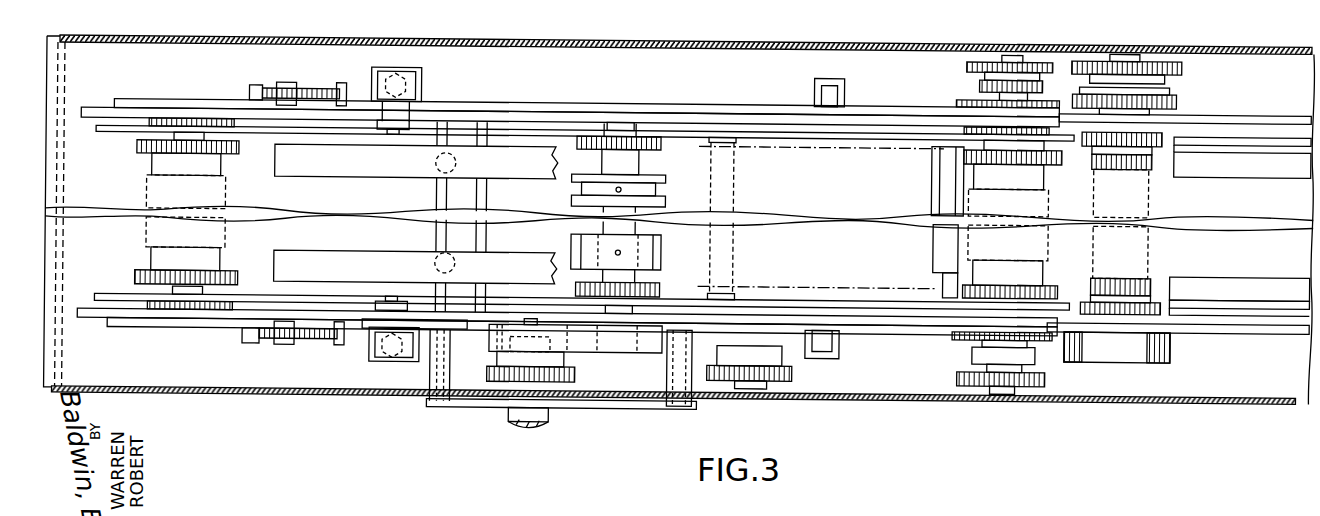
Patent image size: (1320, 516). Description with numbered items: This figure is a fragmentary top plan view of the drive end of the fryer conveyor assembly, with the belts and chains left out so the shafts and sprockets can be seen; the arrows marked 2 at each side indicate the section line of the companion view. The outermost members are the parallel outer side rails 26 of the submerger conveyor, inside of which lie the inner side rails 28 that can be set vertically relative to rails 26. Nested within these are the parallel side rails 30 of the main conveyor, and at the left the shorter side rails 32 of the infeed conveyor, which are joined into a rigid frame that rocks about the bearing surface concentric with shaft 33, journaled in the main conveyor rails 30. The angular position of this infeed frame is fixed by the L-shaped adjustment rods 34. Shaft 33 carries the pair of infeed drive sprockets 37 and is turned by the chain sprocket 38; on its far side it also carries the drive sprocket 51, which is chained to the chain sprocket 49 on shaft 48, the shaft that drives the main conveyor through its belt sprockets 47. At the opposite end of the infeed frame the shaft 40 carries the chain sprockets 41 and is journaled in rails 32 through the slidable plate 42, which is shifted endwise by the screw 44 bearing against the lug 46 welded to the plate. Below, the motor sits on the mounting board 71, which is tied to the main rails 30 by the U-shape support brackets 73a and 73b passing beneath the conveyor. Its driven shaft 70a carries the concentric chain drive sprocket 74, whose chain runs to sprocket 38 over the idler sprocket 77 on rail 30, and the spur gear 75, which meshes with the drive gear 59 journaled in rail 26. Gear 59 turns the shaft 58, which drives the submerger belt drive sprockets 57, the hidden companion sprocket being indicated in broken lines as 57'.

The section line 2- 2 is at (23, 348).
The outer side rails 26 is at (118, 131).
The inner side rails 28 is at (937, 139).
The side rails 30 is at (433, 99).
The side rails 32 is at (96, 95).
The shaft 33 is at (1003, 386).
The adjustment rods 34 is at (402, 62).
The drive sprockets 37 is at (1050, 155).
The chain sprocket 38 is at (963, 366).
The shaft 40 is at (207, 327).
The chain sprockets 41 is at (225, 152).
The slidable plate 42 is at (130, 98).
The screw 44 is at (312, 87).
The lug 46 is at (250, 341).
The belt sprockets 47 is at (1160, 139).
The shaft 48 is at (1140, 332).
The chain sprocket 49 is at (1155, 57).
The drive sprocket 51 is at (1025, 52).
The belt drive sprockets 57 is at (485, 215).
The gear shaft axis 57' is at (821, 217).
The shaft 58 is at (665, 237).
The drive gear 59 is at (645, 347).
The driven shaft 70a is at (554, 408).
The mounting board 71 is at (620, 399).
The U-shape support bracket 73a is at (435, 341).
The U-shape support bracket 73b is at (693, 344).
The chain drive sprocket 74 is at (505, 380).
The spur gear 75 is at (492, 334).
The idler sprocket 77 is at (768, 375).